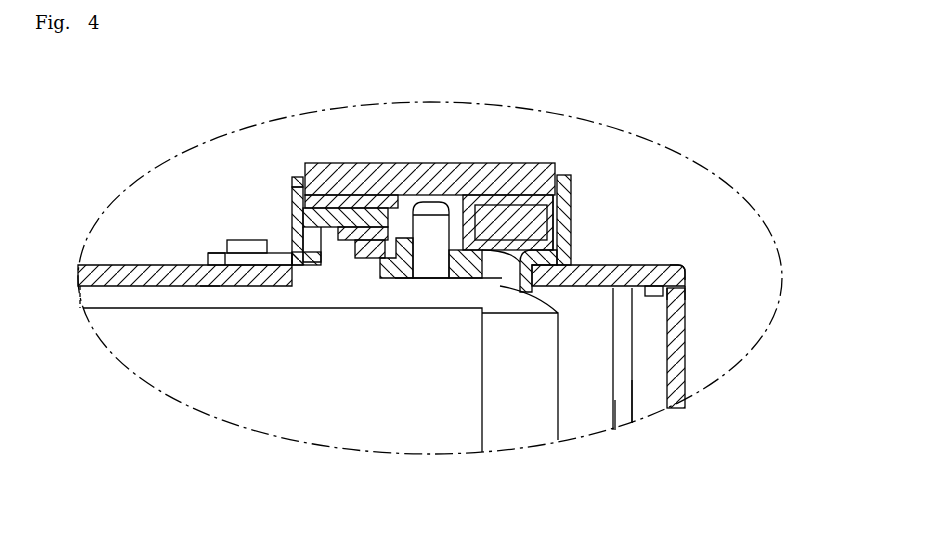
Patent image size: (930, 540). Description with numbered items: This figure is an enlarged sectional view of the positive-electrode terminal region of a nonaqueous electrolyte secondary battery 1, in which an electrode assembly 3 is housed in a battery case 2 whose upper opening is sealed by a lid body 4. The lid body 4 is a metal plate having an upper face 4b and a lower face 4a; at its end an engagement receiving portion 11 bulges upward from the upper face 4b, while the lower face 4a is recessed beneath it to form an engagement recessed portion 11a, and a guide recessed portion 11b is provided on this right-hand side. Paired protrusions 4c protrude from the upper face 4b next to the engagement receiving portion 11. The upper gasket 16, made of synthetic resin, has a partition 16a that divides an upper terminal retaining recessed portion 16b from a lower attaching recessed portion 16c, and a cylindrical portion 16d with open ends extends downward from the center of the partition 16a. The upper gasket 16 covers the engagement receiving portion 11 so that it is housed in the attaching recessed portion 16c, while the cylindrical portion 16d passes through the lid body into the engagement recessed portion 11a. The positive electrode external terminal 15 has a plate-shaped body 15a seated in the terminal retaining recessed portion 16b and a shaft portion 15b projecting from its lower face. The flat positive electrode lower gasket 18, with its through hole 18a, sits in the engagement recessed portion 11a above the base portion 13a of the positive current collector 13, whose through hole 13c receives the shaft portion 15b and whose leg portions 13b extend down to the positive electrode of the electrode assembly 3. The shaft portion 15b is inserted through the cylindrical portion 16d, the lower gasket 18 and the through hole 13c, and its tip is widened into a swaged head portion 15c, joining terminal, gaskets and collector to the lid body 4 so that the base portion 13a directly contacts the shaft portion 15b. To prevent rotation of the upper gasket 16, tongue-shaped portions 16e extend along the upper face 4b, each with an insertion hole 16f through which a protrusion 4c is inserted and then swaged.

The nonaqueous electrolyte secondary battery 1 is at (706, 108).
The battery case 2 is at (683, 380).
The electrode assembly 3 is at (398, 445).
The lid body 4 is at (657, 252).
The lower face 4a is at (707, 290).
The upper face 4b is at (683, 272).
The protrusion 4c is at (210, 252).
The engagement receiving portion 11 is at (293, 250).
The engagement recessed portion 11a is at (232, 242).
The guide recessed portion 11b is at (366, 232).
The positive current collector 13 is at (568, 410).
The base portion 13a is at (616, 428).
The leg portion 13b is at (628, 397).
The through hole 13c is at (432, 285).
The positive electrode external terminal 15 is at (527, 150).
The plate-shaped body 15a is at (458, 163).
The shaft portion 15b is at (485, 250).
The swaged head portion 15c is at (457, 233).
The upper gasket 16 is at (570, 172).
The partition 16a is at (497, 163).
The terminal retaining recessed portion 16b is at (566, 160).
The attaching recessed portion 16c is at (313, 265).
The cylindrical portion 16d is at (440, 262).
The tongue-shaped portion 16e is at (210, 252).
The insertion hole 16f is at (213, 283).
The positive electrode lower gasket 18 is at (315, 250).
The through hole 18a is at (423, 203).